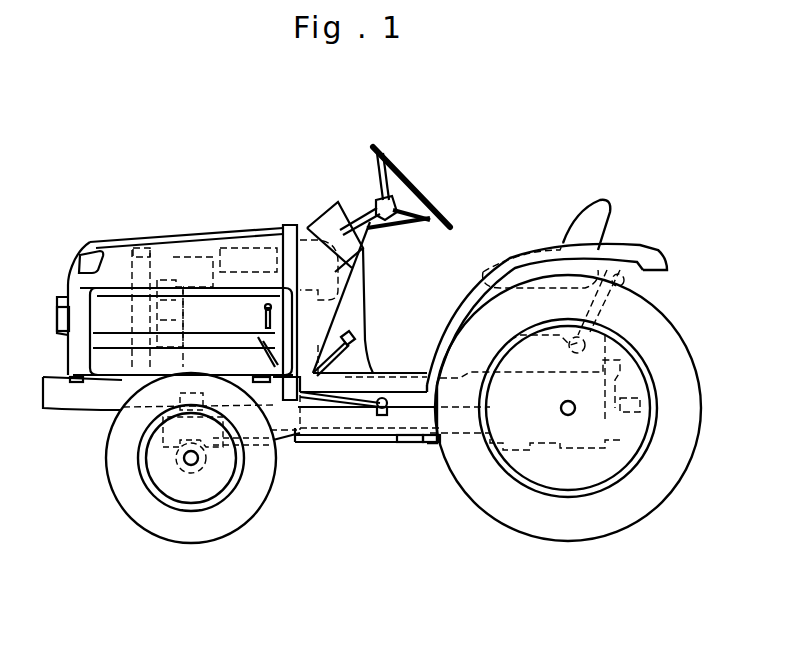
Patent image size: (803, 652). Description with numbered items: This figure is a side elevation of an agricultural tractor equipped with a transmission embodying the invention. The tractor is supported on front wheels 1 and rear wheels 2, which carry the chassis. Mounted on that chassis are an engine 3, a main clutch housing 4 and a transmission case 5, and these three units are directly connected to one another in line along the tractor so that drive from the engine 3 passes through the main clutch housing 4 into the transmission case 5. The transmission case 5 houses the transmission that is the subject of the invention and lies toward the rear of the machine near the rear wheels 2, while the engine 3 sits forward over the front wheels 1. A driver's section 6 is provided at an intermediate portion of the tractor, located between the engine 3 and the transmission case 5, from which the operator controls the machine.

The front wheels 1 is at (200, 543).
The rear wheels 2 is at (582, 543).
The engine 3 is at (210, 272).
The main clutch housing 4 is at (343, 328).
The transmission case 5 is at (483, 443).
The driver's section 6 is at (473, 212).